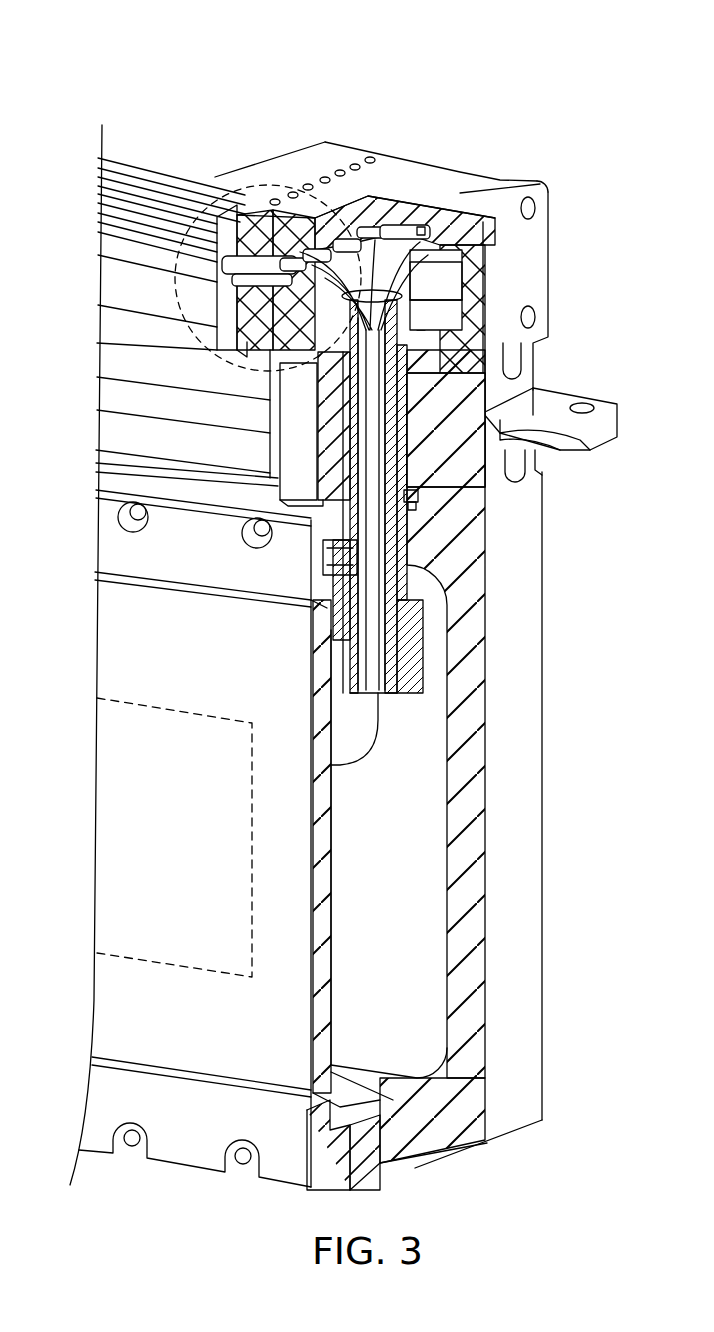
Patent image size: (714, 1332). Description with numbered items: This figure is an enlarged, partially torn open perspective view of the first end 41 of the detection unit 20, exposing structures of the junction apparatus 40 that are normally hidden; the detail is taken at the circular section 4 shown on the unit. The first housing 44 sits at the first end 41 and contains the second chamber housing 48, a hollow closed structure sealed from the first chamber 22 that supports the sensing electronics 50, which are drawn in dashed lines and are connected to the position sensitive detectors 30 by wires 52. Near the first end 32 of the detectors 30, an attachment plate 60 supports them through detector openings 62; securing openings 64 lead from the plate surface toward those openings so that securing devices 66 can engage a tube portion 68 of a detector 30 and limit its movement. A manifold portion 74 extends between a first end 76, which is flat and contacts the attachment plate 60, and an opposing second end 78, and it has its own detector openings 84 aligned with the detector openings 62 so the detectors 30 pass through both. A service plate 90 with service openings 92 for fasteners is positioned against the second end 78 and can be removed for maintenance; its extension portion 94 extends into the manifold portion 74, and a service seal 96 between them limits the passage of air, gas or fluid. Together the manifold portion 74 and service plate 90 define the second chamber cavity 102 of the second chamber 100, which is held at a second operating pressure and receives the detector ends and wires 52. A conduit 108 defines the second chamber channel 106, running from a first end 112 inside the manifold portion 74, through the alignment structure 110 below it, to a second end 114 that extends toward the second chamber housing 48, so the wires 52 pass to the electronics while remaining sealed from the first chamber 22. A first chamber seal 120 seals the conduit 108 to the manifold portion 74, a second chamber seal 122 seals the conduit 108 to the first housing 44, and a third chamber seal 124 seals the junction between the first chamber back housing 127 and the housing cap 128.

The detection unit 20 is at (212, 74).
The first chamber 22 is at (594, 651).
The position sensitive detectors 30 is at (146, 252).
The first end 32 is at (213, 215).
The detail area 4 is at (200, 347).
The junction apparatus 40 is at (469, 115).
The first end 41 is at (357, 99).
The first housing 44 is at (115, 625).
The second chamber housing 48 is at (427, 845).
The sensing electronics 50 is at (157, 967).
The wires 52 is at (351, 768).
The attachment plate 60 is at (318, 150).
The detector openings 62 is at (262, 300).
The securing openings 64 is at (260, 208).
The securing device 66 is at (257, 212).
The tube portion 68 is at (222, 268).
The manifold portion 74 is at (400, 175).
The first end 76 is at (372, 153).
The second end 78 is at (493, 172).
The detector openings 84 is at (305, 312).
The service plate 90 is at (538, 241).
The service openings 92 is at (537, 208).
The extension portion 94 is at (462, 232).
The service seal 96 is at (427, 227).
The second chamber 100 is at (462, 300).
The second chamber cavity 102 is at (440, 283).
The second chamber channel 106 is at (405, 405).
The conduit 108 is at (397, 450).
The alignment structure 110 is at (528, 367).
The first end 112 is at (325, 370).
The second end 114 is at (408, 694).
The first chamber seal 120 is at (385, 382).
The second chamber seal 122 is at (412, 497).
The third chamber seal 124 is at (340, 560).
The first chamber back housing 127 is at (317, 528).
The housing cap 128 is at (313, 603).